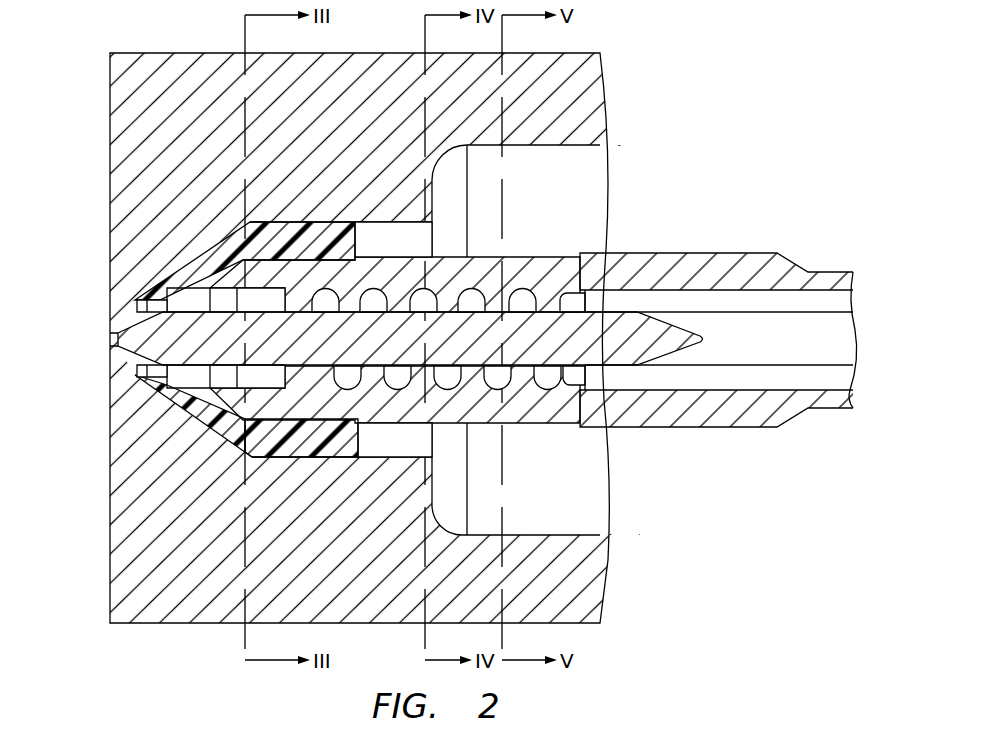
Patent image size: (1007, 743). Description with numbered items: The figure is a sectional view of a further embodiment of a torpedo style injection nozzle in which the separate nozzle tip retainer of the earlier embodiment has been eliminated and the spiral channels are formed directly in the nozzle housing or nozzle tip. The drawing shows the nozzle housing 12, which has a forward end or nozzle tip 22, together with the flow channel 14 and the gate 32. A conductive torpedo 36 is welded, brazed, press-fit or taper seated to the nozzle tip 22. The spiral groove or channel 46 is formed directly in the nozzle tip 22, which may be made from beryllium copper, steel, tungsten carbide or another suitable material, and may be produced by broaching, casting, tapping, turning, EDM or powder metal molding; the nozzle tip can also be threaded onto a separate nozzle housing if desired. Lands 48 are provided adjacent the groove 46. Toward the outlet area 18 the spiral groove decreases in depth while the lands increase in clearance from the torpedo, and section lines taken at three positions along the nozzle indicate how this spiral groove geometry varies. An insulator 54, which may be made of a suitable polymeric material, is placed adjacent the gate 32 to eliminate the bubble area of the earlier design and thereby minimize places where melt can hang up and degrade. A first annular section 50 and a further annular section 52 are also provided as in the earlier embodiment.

The nozzle housing 12 is at (702, 262).
The flow channel 14 is at (840, 343).
The outlet area 18 is at (160, 300).
The nozzle tip 22 is at (525, 257).
The gate 32 is at (108, 340).
The torpedo 36 is at (702, 340).
The spiral groove 46 is at (397, 258).
The lands 48 is at (373, 300).
The first annular section 50 is at (257, 392).
The further annular section 52 is at (218, 386).
The insulator 54 is at (218, 240).